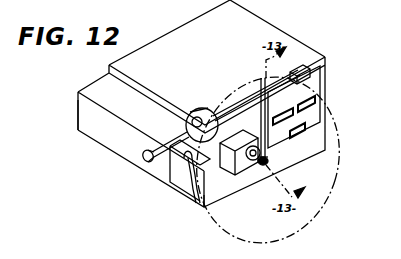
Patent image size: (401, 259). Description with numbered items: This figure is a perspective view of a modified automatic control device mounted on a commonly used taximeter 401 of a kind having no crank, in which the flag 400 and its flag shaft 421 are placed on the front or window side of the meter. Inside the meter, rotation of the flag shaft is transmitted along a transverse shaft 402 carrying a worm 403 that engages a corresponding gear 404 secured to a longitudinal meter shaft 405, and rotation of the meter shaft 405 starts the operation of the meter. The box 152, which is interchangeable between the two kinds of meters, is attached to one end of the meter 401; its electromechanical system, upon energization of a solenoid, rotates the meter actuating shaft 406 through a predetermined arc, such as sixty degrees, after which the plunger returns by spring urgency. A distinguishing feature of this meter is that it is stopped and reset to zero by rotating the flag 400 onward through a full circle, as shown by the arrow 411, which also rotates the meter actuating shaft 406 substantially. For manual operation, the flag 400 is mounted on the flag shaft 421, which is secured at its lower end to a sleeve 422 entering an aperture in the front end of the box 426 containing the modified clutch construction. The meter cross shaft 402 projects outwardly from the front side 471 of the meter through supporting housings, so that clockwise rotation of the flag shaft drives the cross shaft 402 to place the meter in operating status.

The box 152 is at (100, 137).
The flag 400 is at (321, 78).
The meter 401 is at (203, 46).
The transverse shaft 402 is at (182, 102).
The worm 403 is at (210, 104).
The gear 404 is at (203, 171).
The meter shaft 405 is at (303, 68).
The meter actuating shaft 406 is at (161, 165).
The arrow 411 is at (331, 162).
The flag shaft 421 is at (268, 155).
The sleeve 422 is at (264, 168).
The box 426 is at (253, 162).
The front side 471 is at (204, 212).